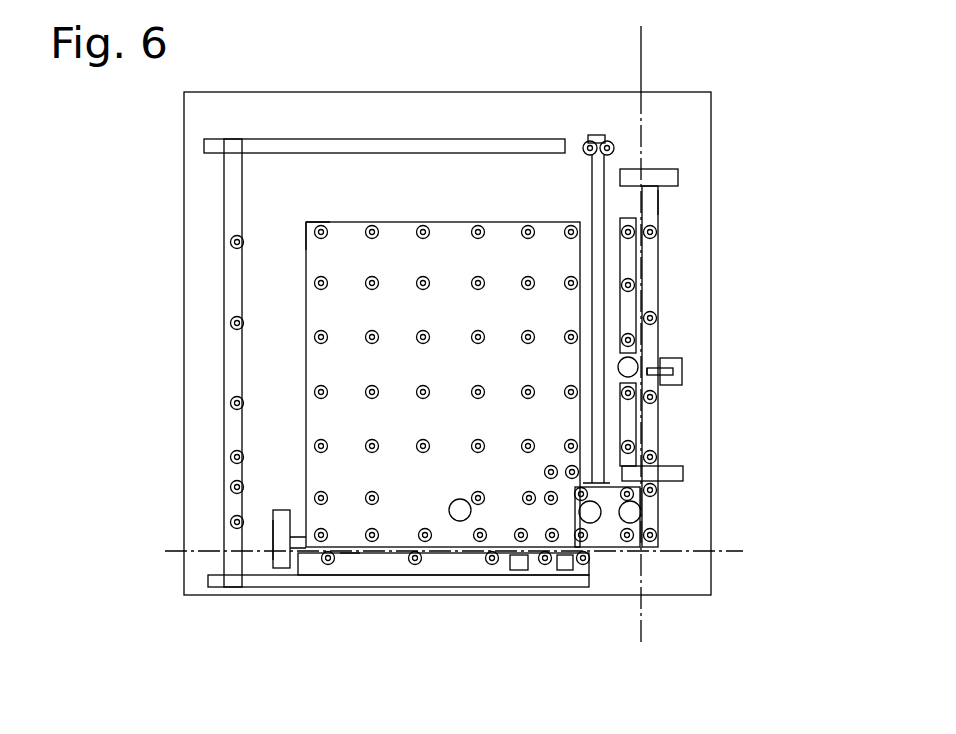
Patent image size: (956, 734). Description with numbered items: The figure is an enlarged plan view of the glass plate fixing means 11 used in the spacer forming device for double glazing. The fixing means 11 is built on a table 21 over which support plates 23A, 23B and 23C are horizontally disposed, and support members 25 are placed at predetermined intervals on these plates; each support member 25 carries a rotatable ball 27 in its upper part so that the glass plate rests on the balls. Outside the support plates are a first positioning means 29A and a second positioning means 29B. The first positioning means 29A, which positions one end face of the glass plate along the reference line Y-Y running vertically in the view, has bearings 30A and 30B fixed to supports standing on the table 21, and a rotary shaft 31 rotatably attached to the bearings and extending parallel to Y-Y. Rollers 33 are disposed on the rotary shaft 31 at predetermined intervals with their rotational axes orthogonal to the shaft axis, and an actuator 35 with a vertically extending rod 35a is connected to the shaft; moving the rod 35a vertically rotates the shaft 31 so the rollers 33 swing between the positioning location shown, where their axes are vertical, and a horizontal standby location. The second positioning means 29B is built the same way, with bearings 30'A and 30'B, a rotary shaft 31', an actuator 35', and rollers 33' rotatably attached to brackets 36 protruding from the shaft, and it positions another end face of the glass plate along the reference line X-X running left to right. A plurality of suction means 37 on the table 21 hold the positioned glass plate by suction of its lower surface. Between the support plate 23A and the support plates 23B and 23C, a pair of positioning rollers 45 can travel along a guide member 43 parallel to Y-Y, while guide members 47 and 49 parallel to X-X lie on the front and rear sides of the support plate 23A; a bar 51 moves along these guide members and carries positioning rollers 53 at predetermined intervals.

The glass plate fixing means 11 is at (655, 86).
The table 21 is at (683, 103).
The support plate 23A is at (447, 230).
The support plate 23B is at (640, 252).
The support plate 23C is at (650, 424).
The support member 25 is at (372, 225).
The rotatable ball 27 is at (306, 222).
The first positioning means 29A is at (683, 176).
The second positioning means 29B is at (270, 538).
The bearing 30A is at (668, 169).
The bearing 30B is at (682, 478).
The bearing 30'A is at (242, 578).
The bearing 30'B is at (589, 616).
The rotary shaft 31 is at (719, 205).
The rotary shaft 31' is at (433, 600).
The roller 33 is at (706, 341).
The roller 33' is at (423, 610).
The actuator 35 is at (727, 382).
The actuator 35' is at (520, 616).
The rod 35a is at (670, 380).
The bracket 36 is at (348, 556).
The suction means 37 is at (661, 356).
The guide member 43 is at (601, 133).
The positioning roller 45 is at (591, 138).
The guide member 47 is at (370, 587).
The guide member 49 is at (253, 148).
The bar 51 is at (226, 372).
The positioning roller 53 is at (232, 242).